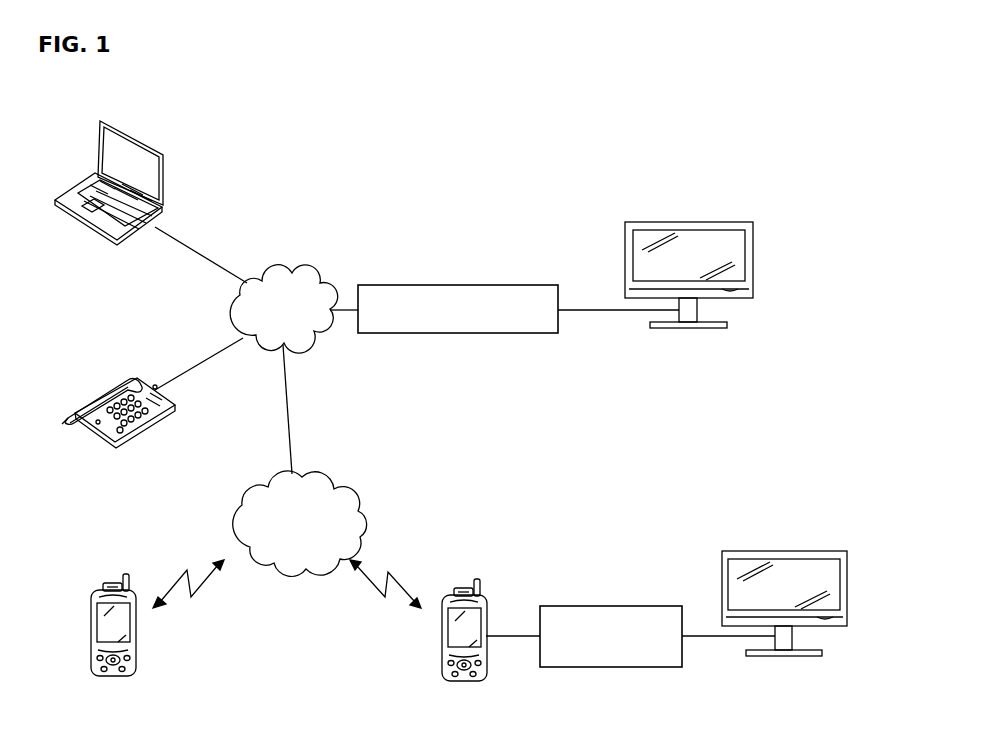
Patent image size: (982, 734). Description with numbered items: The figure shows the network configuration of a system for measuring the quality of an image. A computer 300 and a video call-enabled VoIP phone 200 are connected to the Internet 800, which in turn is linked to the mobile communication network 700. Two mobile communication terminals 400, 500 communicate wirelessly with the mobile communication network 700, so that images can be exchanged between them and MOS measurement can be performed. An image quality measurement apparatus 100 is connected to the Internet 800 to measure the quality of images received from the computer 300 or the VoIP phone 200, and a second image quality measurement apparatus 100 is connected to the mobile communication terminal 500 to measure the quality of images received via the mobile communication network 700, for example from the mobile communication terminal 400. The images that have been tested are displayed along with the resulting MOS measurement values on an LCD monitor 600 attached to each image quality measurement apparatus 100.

The image quality measurement apparatus 100 is at (521, 285).
The video call-enabled VoIP phone 200 is at (144, 371).
The computer 300 is at (147, 141).
The mobile communication terminal 400 is at (116, 579).
The mobile communication terminal 500 is at (466, 583).
The LCD monitor 600 is at (723, 222).
The mobile communication network 700 is at (335, 482).
The Internet 800 is at (301, 271).